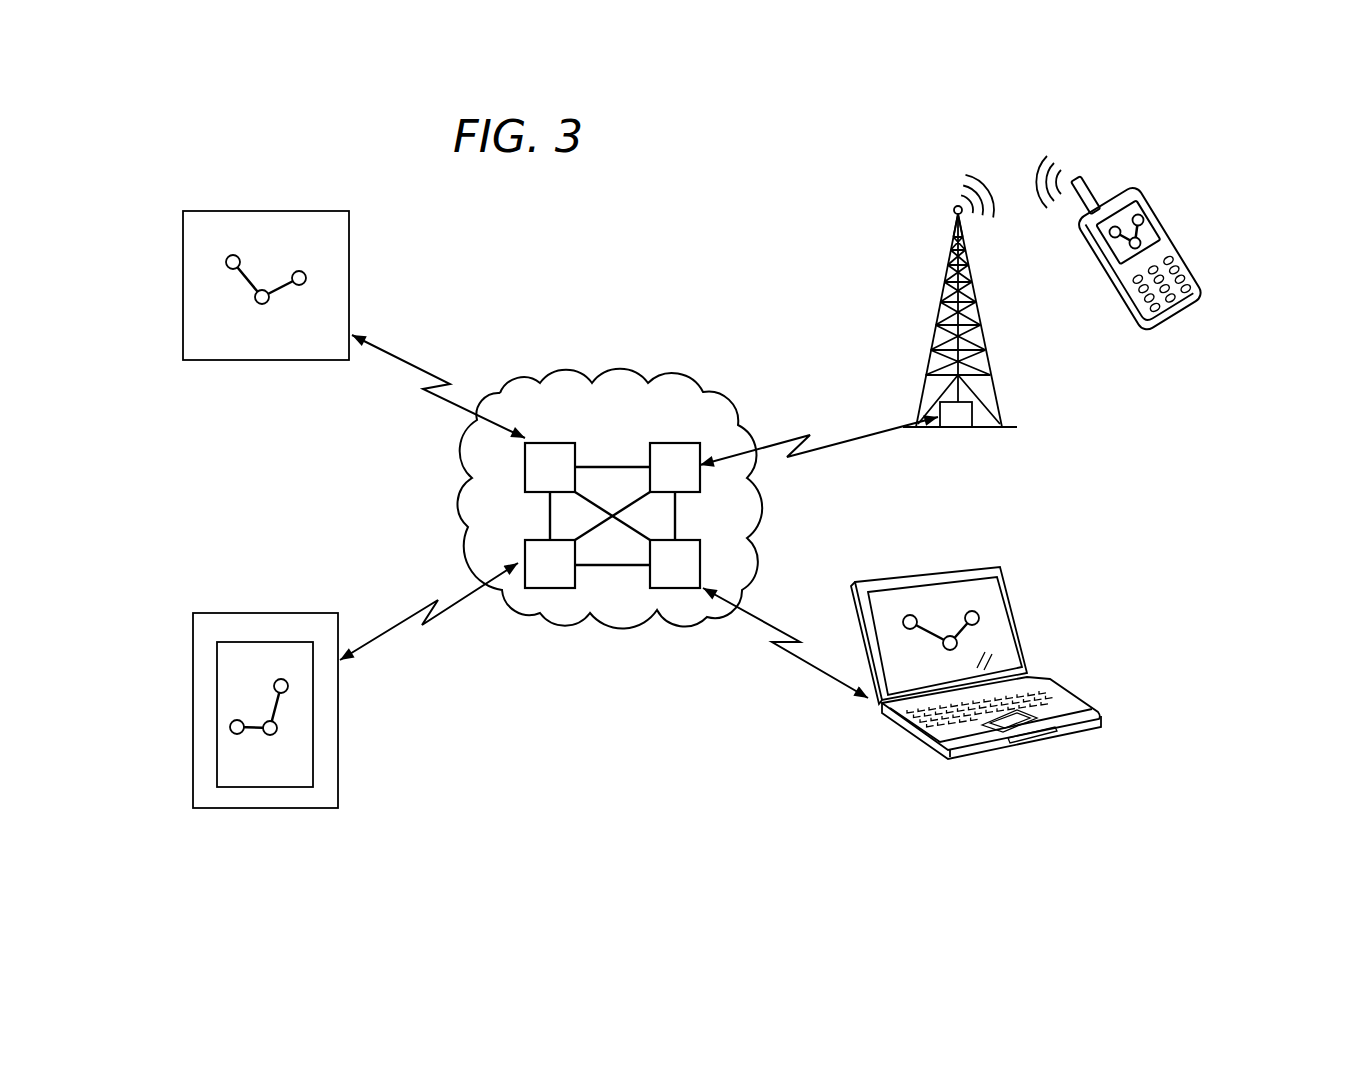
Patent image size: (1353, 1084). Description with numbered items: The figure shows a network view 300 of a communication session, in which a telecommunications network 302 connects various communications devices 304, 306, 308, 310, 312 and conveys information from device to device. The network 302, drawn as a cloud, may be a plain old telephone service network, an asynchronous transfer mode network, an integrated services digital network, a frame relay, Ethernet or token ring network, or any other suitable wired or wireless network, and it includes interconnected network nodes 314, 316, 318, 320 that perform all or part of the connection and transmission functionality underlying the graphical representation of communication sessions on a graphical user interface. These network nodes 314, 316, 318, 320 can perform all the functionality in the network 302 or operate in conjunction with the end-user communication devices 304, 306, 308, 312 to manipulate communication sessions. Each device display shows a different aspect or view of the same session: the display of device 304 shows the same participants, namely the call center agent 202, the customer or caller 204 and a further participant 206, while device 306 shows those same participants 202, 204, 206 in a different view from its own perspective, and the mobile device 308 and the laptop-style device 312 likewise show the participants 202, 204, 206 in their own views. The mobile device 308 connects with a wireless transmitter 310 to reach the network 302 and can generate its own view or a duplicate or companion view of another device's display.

The network view 300 is at (720, 218).
The telecommunications network 302 is at (612, 372).
The communications device 304 is at (261, 808).
The communications device 306 is at (258, 360).
The mobile device 308 is at (1175, 324).
The wireless transmitter 310 is at (958, 429).
The communications device 312 is at (1030, 743).
The network node 314 is at (675, 589).
The network node 316 is at (678, 442).
The network node 318 is at (524, 463).
The network node 320 is at (549, 589).
The call center agent 202 is at (233, 255).
The customer or caller 204 is at (256, 299).
The participant 206 is at (306, 278).